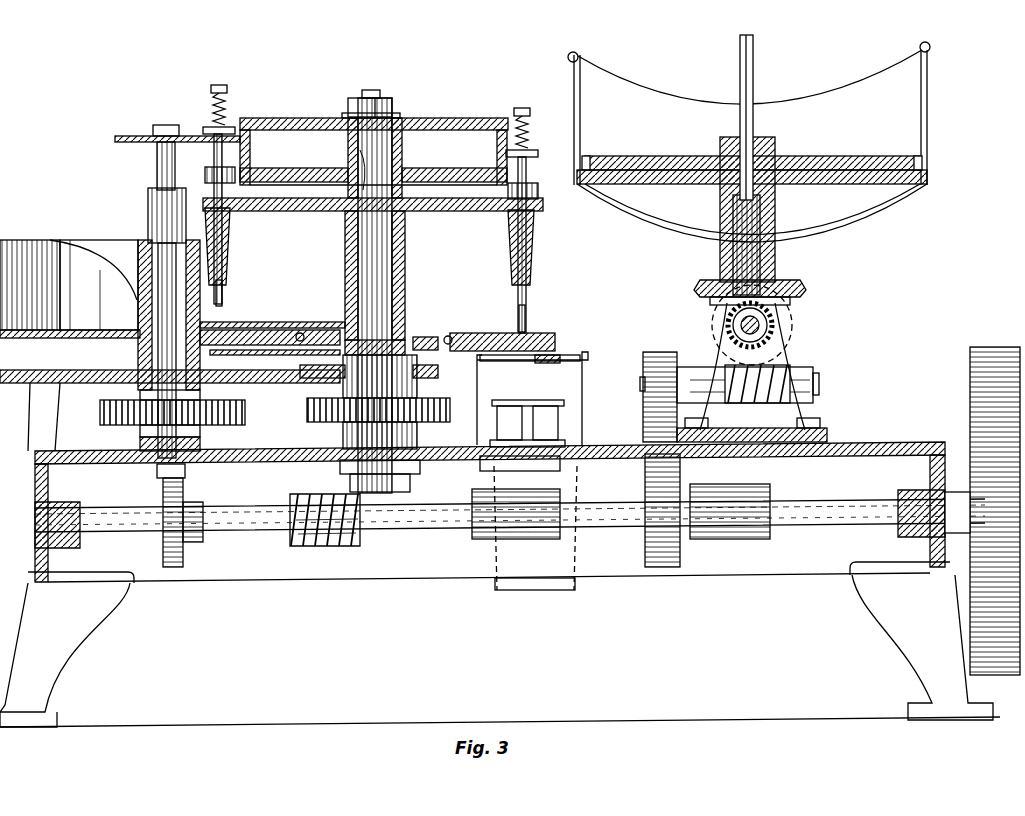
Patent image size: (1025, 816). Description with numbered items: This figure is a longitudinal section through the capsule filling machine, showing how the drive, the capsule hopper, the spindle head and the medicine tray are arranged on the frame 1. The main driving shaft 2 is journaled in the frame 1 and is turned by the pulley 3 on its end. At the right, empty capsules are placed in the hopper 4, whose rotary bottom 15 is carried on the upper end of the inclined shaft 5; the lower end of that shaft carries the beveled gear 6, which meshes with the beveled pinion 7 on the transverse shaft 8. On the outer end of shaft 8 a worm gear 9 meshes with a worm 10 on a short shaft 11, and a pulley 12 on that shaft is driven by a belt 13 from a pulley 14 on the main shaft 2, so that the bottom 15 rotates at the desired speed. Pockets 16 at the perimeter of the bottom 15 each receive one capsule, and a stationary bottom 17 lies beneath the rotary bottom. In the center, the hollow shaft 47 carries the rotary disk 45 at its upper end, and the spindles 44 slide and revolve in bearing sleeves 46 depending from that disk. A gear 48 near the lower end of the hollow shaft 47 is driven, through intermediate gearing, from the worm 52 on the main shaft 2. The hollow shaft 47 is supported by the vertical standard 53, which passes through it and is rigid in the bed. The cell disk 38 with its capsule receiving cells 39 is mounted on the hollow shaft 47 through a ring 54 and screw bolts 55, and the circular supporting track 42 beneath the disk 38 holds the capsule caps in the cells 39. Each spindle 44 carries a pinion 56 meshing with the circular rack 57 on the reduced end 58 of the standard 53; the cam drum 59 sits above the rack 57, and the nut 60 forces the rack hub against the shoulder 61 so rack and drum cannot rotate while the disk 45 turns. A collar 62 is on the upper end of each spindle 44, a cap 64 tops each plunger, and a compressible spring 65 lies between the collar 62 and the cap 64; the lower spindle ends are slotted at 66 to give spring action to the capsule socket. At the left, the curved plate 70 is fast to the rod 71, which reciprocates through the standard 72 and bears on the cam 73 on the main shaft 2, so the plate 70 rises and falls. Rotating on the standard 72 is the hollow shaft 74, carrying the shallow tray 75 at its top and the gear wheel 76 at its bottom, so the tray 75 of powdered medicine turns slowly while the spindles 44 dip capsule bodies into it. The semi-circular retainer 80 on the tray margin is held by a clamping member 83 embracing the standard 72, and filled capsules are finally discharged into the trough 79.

The frame 1 is at (905, 442).
The main driving shaft 2 is at (106, 508).
The pulley 3 is at (978, 350).
The hopper 4 is at (927, 98).
The inclined shaft 5 is at (760, 243).
The beveled gear 6 is at (805, 288).
The beveled pinion 7 is at (770, 335).
The transverse shaft 8 is at (740, 322).
The worm gear 9 is at (792, 324).
The worm 10 is at (754, 404).
The short shaft 11 is at (640, 383).
The pulley 12 is at (646, 352).
The belt 13 is at (643, 430).
The pulley 14 is at (645, 487).
The hopper bottom 15 is at (845, 156).
The pockets 16 is at (587, 156).
The stationary bottom 17 is at (683, 184).
The rotary disk 38 is at (552, 335).
The capsule receiving cells 39 is at (230, 330).
The supporting track 42 is at (465, 368).
The spindles 44 is at (222, 278).
The rotary disk 45 is at (468, 211).
The bearing sleeves 46 is at (228, 240).
The hollow shaft 47 is at (405, 297).
The gear 48 is at (307, 410).
The worm 52 is at (314, 494).
The vertical standard 53 is at (392, 267).
The ring 54 is at (428, 330).
The screw bolts 55 is at (302, 333).
The pinion 56 is at (205, 172).
The circular rack 57 is at (246, 176).
The reduced end 58 is at (402, 150).
The cam drum 59 is at (468, 113).
The nut 60 is at (392, 98).
The shoulder 61 is at (360, 165).
The collar 62 is at (212, 127).
The cap 64 is at (227, 89).
The compressible spring 65 is at (226, 105).
The slots 66 is at (222, 293).
The plate 70 is at (124, 136).
The rod 71 is at (157, 160).
The standard 72 is at (158, 205).
The cam 73 is at (184, 490).
The hollow shaft 74 is at (140, 356).
The tray 75 is at (84, 330).
The gear wheel 76 is at (100, 412).
The trough 79 is at (580, 408).
The retainer 80 is at (27, 262).
The clamping member 83 is at (138, 275).